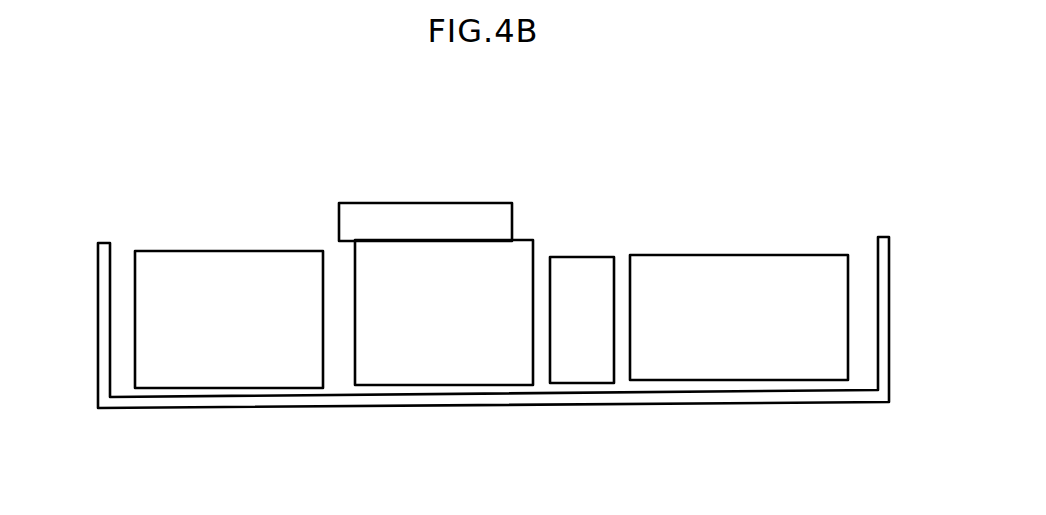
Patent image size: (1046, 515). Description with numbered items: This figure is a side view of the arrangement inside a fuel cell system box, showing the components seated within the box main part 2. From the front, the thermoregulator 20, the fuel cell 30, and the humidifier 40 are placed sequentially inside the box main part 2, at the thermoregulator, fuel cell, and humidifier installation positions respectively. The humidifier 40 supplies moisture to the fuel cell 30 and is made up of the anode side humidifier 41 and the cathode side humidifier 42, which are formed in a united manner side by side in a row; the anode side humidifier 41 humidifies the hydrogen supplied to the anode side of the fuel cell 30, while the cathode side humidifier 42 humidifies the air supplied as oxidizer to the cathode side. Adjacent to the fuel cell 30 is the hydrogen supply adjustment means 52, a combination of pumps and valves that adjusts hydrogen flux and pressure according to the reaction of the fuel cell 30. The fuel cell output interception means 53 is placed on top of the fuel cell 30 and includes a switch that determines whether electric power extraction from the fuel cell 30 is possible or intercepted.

The box main part 2 is at (342, 400).
The thermoregulator 20 is at (225, 243).
The fuel cell 30 is at (429, 295).
The humidifier 40 is at (739, 314).
The anode side humidifier 41 is at (739, 364).
The cathode side humidifier 42 is at (757, 340).
The hydrogen supply adjustment means 52 is at (588, 348).
The fuel cell output interception means 53 is at (425, 222).